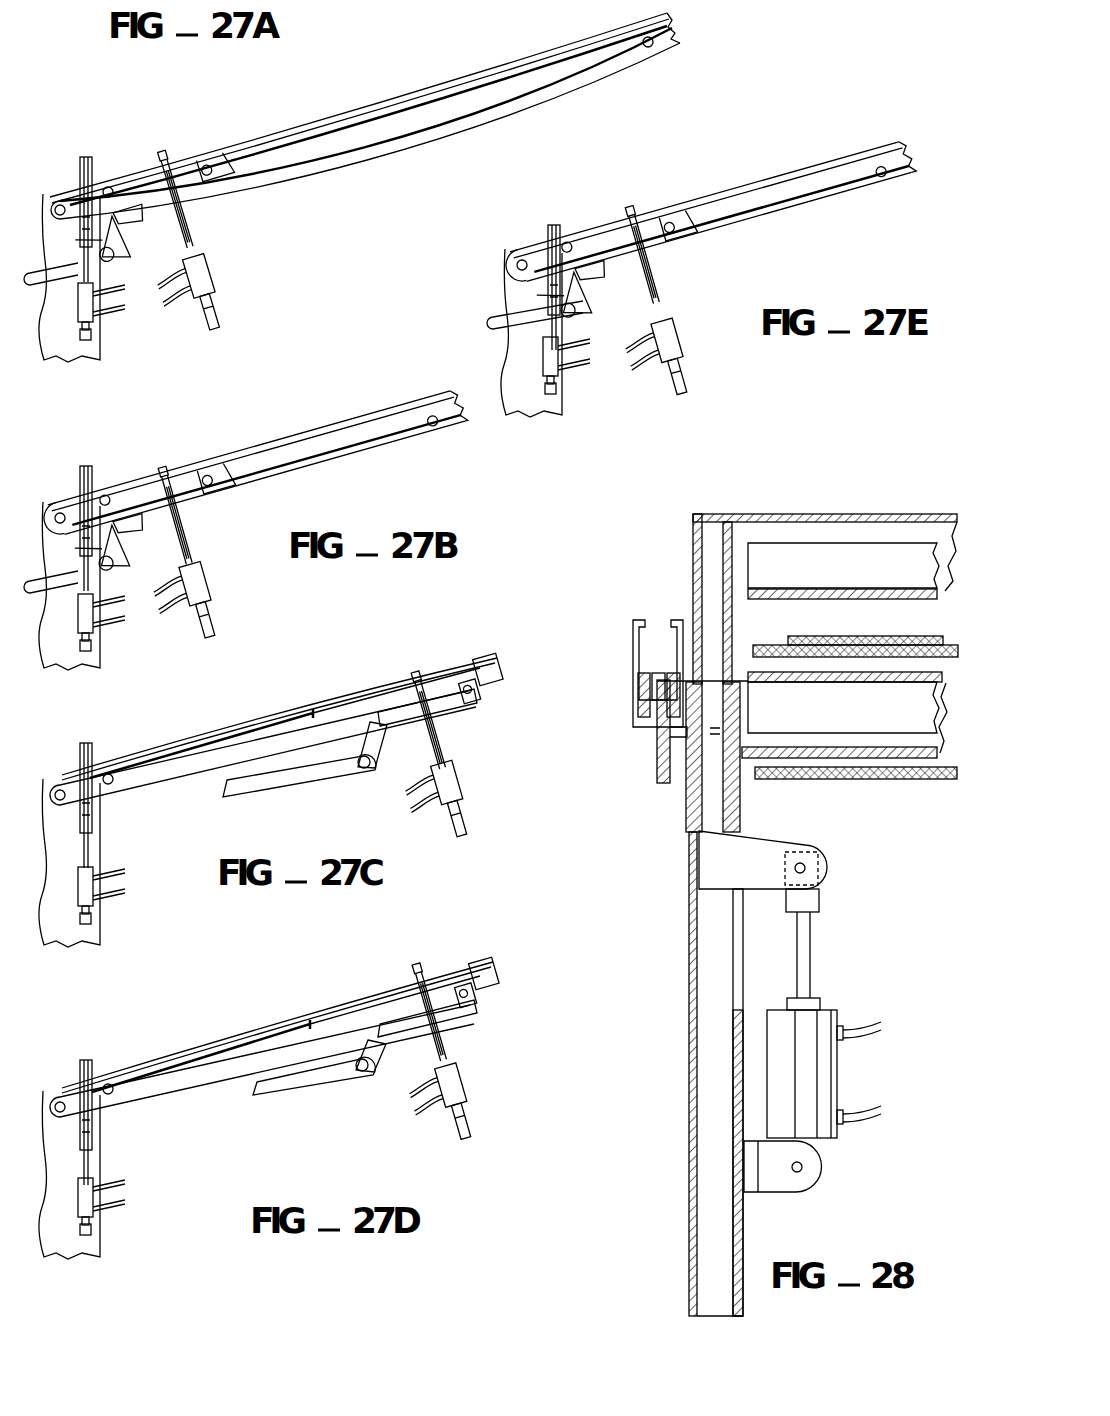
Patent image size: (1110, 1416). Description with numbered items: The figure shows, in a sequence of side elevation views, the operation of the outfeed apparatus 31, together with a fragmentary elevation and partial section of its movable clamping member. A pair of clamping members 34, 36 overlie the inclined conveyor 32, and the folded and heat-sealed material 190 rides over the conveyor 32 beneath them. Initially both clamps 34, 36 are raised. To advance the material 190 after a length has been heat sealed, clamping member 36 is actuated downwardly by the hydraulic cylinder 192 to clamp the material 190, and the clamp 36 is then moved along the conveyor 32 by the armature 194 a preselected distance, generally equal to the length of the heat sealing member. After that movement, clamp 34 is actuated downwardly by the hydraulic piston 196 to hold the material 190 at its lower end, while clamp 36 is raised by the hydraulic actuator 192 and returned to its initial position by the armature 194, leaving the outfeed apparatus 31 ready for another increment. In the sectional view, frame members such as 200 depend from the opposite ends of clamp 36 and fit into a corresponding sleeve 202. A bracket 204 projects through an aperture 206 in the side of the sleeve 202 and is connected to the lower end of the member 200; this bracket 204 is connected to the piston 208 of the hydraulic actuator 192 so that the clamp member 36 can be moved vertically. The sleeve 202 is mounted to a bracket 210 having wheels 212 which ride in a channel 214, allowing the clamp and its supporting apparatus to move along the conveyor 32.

In FIG. 27A, the outfeed apparatus 31 is at (335, 98).
In FIG. 27B, the outfeed apparatus 31 is at (337, 415).
In FIG. 27E, the outfeed apparatus 31 is at (712, 182).
In FIG. 27C, the outfeed apparatus 31 is at (341, 690).
In FIG. 27D, the outfeed apparatus 31 is at (352, 985).
In FIG. 27A, the inclined conveyor 32 is at (303, 137).
In FIG. 27B, the inclined conveyor 32 is at (300, 442).
In FIG. 27E, the inclined conveyor 32 is at (823, 182).
In FIG. 27C, the inclined conveyor 32 is at (187, 754).
In FIG. 27D, the inclined conveyor 32 is at (177, 1064).
In FIG. 28, the inclined conveyor 32 is at (764, 652).
In FIG. 27A, the clamping member 34 is at (90, 153).
In FIG. 27B, the clamping member 34 is at (88, 467).
In FIG. 27E, the clamping member 34 is at (556, 226).
In FIG. 27C, the clamping member 34 is at (92, 746).
In FIG. 27D, the clamping member 34 is at (92, 1067).
In FIG. 27A, the clamping member 36 is at (161, 150).
In FIG. 27B, the clamping member 36 is at (166, 468).
In FIG. 27E, the clamping member 36 is at (629, 203).
In FIG. 27C, the clamping member 36 is at (416, 670).
In FIG. 27D, the clamping member 36 is at (418, 963).
In FIG. 28, the clamping member 36 is at (874, 513).
In FIG. 27A, the material 190 is at (280, 140).
In FIG. 27B, the material 190 is at (297, 440).
In FIG. 27E, the material 190 is at (817, 182).
In FIG. 27C, the material 190 is at (300, 711).
In FIG. 27D, the material 190 is at (273, 1027).
In FIG. 28, the material 190 is at (790, 637).
In FIG. 27A, the hydraulic cylinder 192 is at (210, 272).
In FIG. 27B, the hydraulic cylinder 192 is at (200, 579).
In FIG. 27E, the hydraulic cylinder 192 is at (681, 329).
In FIG. 27C, the hydraulic cylinder 192 is at (450, 775).
In FIG. 27D, the hydraulic cylinder 192 is at (455, 1088).
In FIG. 28, the hydraulic cylinder 192 is at (820, 1068).
In FIG. 27E, the armature 194 is at (494, 322).
In FIG. 27C, the armature 194 is at (297, 778).
In FIG. 27D, the armature 194 is at (327, 1075).
In FIG. 27A, the hydraulic piston 196 is at (92, 300).
In FIG. 27B, the hydraulic piston 196 is at (93, 617).
In FIG. 27E, the hydraulic piston 196 is at (556, 356).
In FIG. 27C, the hydraulic piston 196 is at (92, 884).
In FIG. 27D, the hydraulic piston 196 is at (93, 1193).
In FIG. 28, the frame member 200 is at (693, 572).
In FIG. 28, the sleeve 202 is at (686, 813).
In FIG. 28, the bracket 204 is at (768, 852).
In FIG. 28, the aperture 206 is at (741, 976).
In FIG. 28, the piston 208 is at (809, 950).
In FIG. 28, the bracket 210 is at (657, 751).
In FIG. 28, the wheels 212 is at (640, 688).
In FIG. 28, the channel 214 is at (634, 698).